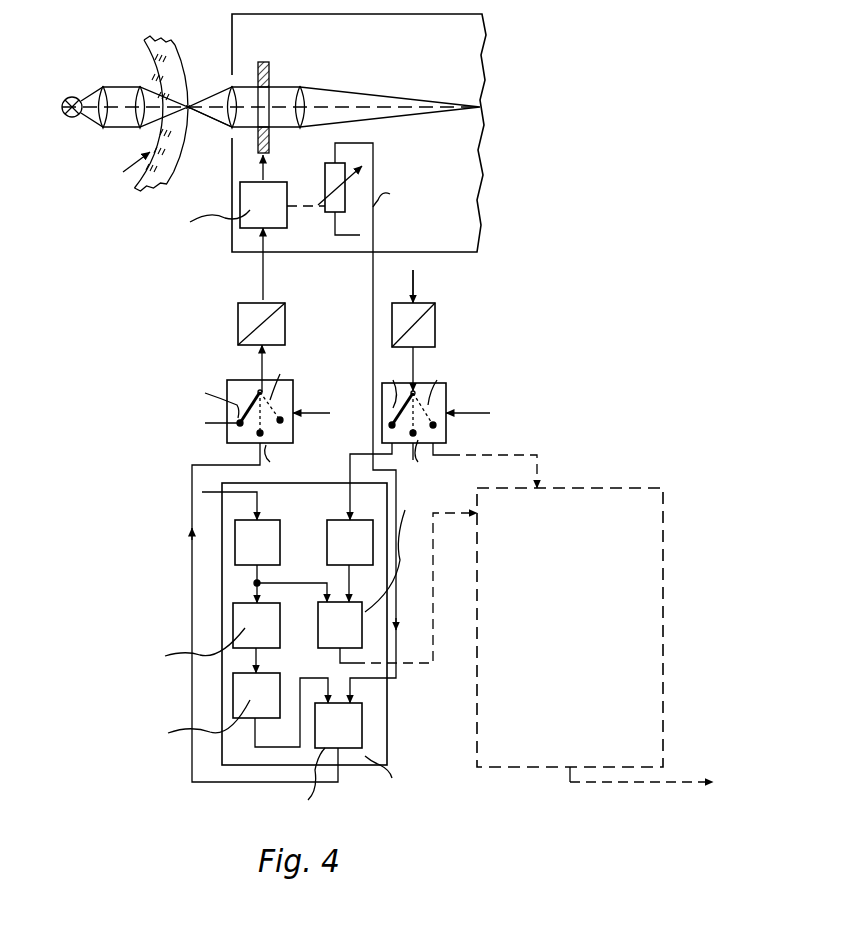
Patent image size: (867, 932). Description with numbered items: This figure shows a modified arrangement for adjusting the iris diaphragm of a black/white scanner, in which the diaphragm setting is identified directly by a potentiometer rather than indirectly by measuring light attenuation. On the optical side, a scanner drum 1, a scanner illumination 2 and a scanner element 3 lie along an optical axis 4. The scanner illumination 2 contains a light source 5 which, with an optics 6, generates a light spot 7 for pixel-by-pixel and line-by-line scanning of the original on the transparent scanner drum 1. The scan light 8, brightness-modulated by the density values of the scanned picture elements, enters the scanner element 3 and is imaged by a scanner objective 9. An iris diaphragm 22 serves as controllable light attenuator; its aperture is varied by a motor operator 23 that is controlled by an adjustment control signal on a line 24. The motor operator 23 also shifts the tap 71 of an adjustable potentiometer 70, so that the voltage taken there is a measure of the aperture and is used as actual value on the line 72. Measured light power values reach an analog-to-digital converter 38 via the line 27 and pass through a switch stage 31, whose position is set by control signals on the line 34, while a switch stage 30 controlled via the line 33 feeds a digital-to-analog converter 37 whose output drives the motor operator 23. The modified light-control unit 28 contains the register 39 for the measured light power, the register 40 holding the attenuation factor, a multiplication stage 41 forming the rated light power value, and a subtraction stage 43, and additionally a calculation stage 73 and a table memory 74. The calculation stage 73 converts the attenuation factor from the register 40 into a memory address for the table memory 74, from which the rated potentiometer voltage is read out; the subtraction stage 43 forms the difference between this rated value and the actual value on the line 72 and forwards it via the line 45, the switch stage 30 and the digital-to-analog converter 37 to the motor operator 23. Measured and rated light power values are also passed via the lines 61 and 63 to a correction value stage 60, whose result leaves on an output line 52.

The scanner drum 1 is at (176, 50).
The scanner illumination 2 is at (130, 174).
The scanner element 3 is at (232, 46).
The optical axis 4 is at (328, 100).
The light source 5 is at (76, 98).
The optics 6 is at (138, 88).
The light spot 7 is at (191, 103).
The scan light 8 is at (217, 118).
The scanner objective 9 is at (279, 90).
The iris diaphragm 22 is at (270, 140).
The motor operator 23 is at (250, 188).
The line 24 is at (262, 293).
The line 27 is at (414, 285).
The light-control unit 28 is at (375, 743).
The switch stage 30 is at (230, 388).
The switch stage 31 is at (446, 428).
The line 33 is at (318, 413).
The line 34 is at (470, 413).
The digital-to-analog converter 37 is at (238, 320).
The analog-to-digital converter 38 is at (434, 320).
The register 39 is at (325, 555).
The register 40 is at (272, 552).
The multiplication stage 41 is at (322, 630).
The subtraction stage 43 is at (352, 718).
The line 45 is at (187, 575).
The output line 52 is at (668, 780).
The correction value stage 60 is at (624, 490).
The line 61 is at (498, 455).
The line 63 is at (436, 580).
The adjustable potentiometer 70 is at (326, 180).
The tap 71 is at (345, 185).
The line 72 is at (368, 350).
The calculation stage 73 is at (278, 630).
The table memory 74 is at (250, 718).